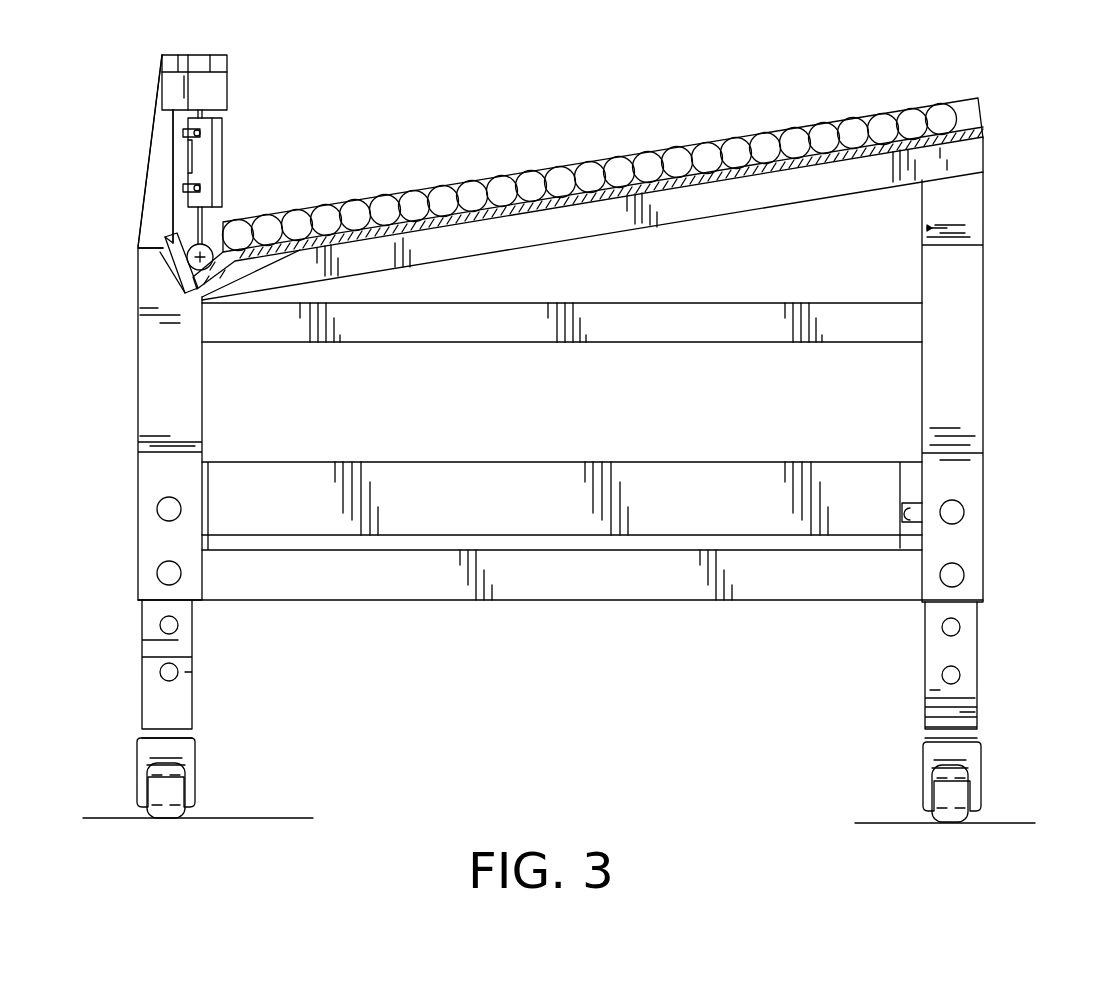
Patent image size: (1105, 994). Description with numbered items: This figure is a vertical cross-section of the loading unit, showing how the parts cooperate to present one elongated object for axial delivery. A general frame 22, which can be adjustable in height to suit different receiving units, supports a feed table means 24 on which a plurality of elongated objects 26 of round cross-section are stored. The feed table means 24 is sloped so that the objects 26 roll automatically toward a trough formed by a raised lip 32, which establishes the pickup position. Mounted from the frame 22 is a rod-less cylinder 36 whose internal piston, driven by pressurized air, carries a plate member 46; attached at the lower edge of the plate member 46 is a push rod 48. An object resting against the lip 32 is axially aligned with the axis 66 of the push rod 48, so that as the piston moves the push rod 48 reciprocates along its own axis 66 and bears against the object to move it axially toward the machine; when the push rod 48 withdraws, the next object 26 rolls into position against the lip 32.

The frame 22 is at (137, 365).
The feed table means 24 is at (985, 123).
The elongated objects 26 is at (750, 140).
The raised lip 32 is at (173, 278).
The rod-less cylinder 36 is at (227, 98).
The plate member 46 is at (220, 147).
The push rod 48 is at (207, 247).
The axis 66 is at (164, 247).